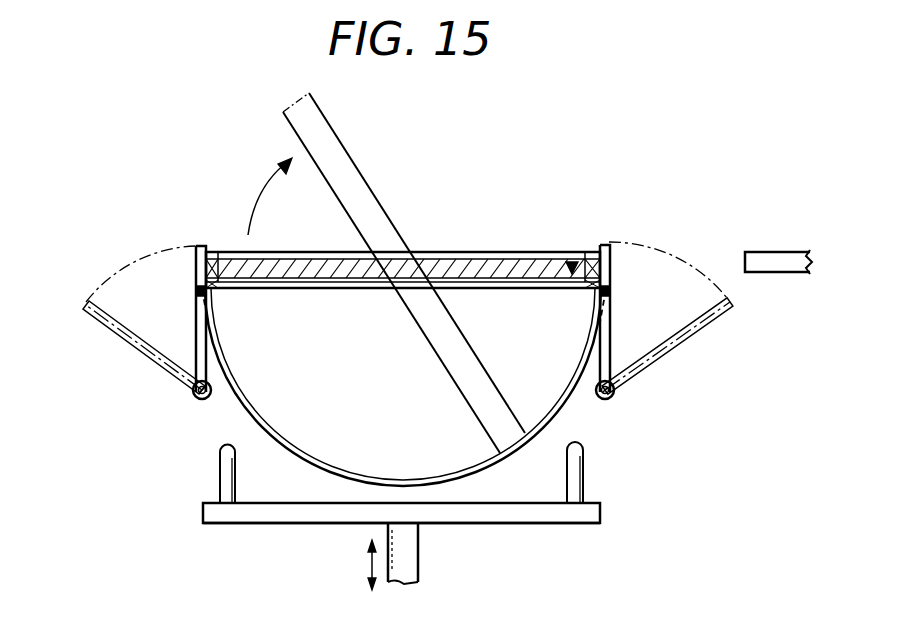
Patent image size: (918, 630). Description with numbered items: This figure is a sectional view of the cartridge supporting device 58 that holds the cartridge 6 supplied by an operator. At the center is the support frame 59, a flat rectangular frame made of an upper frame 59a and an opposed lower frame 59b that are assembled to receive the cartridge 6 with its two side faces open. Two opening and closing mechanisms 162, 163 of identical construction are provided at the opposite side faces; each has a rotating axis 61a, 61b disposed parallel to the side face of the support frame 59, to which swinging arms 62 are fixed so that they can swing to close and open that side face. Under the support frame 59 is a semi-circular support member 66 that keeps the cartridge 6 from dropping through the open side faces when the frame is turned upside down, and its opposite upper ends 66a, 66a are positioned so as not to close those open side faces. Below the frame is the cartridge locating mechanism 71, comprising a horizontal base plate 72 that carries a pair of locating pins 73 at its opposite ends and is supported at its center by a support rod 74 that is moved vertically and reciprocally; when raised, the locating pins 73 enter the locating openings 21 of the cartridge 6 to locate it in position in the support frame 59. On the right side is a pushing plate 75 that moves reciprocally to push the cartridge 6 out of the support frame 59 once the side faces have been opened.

The cartridge 6 is at (478, 252).
The locating openings 21 is at (573, 260).
The cartridge supporting device 58 is at (612, 188).
The support frame 59 is at (228, 250).
The upper frame 59a is at (546, 252).
The lower frame 59b is at (538, 290).
The rotating axis 61a is at (196, 404).
The rotating axis 61b is at (613, 402).
The swinging arms 62 is at (196, 262).
The semi-circular support member 66 is at (270, 428).
The upper ends 66a is at (196, 291).
The cartridge locating mechanism 71 is at (602, 512).
The base plate 72 is at (286, 523).
The locating pins 73 is at (220, 484).
The support rod 74 is at (420, 550).
The pushing plate 75 is at (782, 252).
The opening and closing mechanism 162 is at (692, 363).
The opening and closing mechanism 163 is at (138, 358).